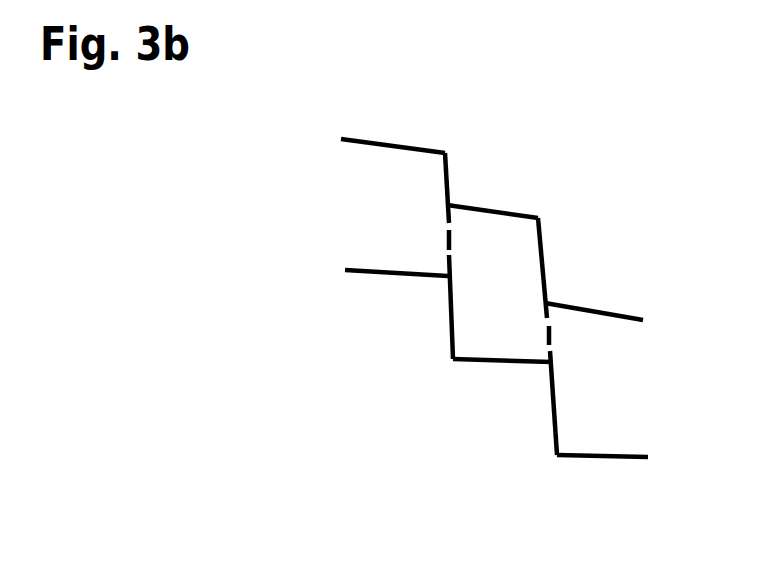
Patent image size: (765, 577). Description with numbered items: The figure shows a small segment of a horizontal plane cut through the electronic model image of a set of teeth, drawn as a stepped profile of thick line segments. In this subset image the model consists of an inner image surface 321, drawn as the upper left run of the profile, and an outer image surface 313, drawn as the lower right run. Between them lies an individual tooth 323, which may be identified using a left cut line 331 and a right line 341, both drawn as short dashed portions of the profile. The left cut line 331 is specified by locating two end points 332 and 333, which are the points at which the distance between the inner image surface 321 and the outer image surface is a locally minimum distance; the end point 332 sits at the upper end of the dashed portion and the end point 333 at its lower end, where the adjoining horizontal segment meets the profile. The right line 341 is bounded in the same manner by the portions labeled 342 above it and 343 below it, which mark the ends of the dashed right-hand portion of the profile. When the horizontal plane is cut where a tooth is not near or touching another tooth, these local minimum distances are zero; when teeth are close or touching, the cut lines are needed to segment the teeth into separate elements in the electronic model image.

The inner image surface 321 is at (376, 108).
The end point 332 is at (491, 174).
The left cut line 331 is at (373, 243).
The end point 333 is at (383, 307).
The individual tooth 323 is at (513, 223).
The second transition segment 342 is at (590, 267).
The right line 341 is at (623, 360).
The second intermediate segment 343 is at (487, 403).
The outer image surface 313 is at (558, 487).